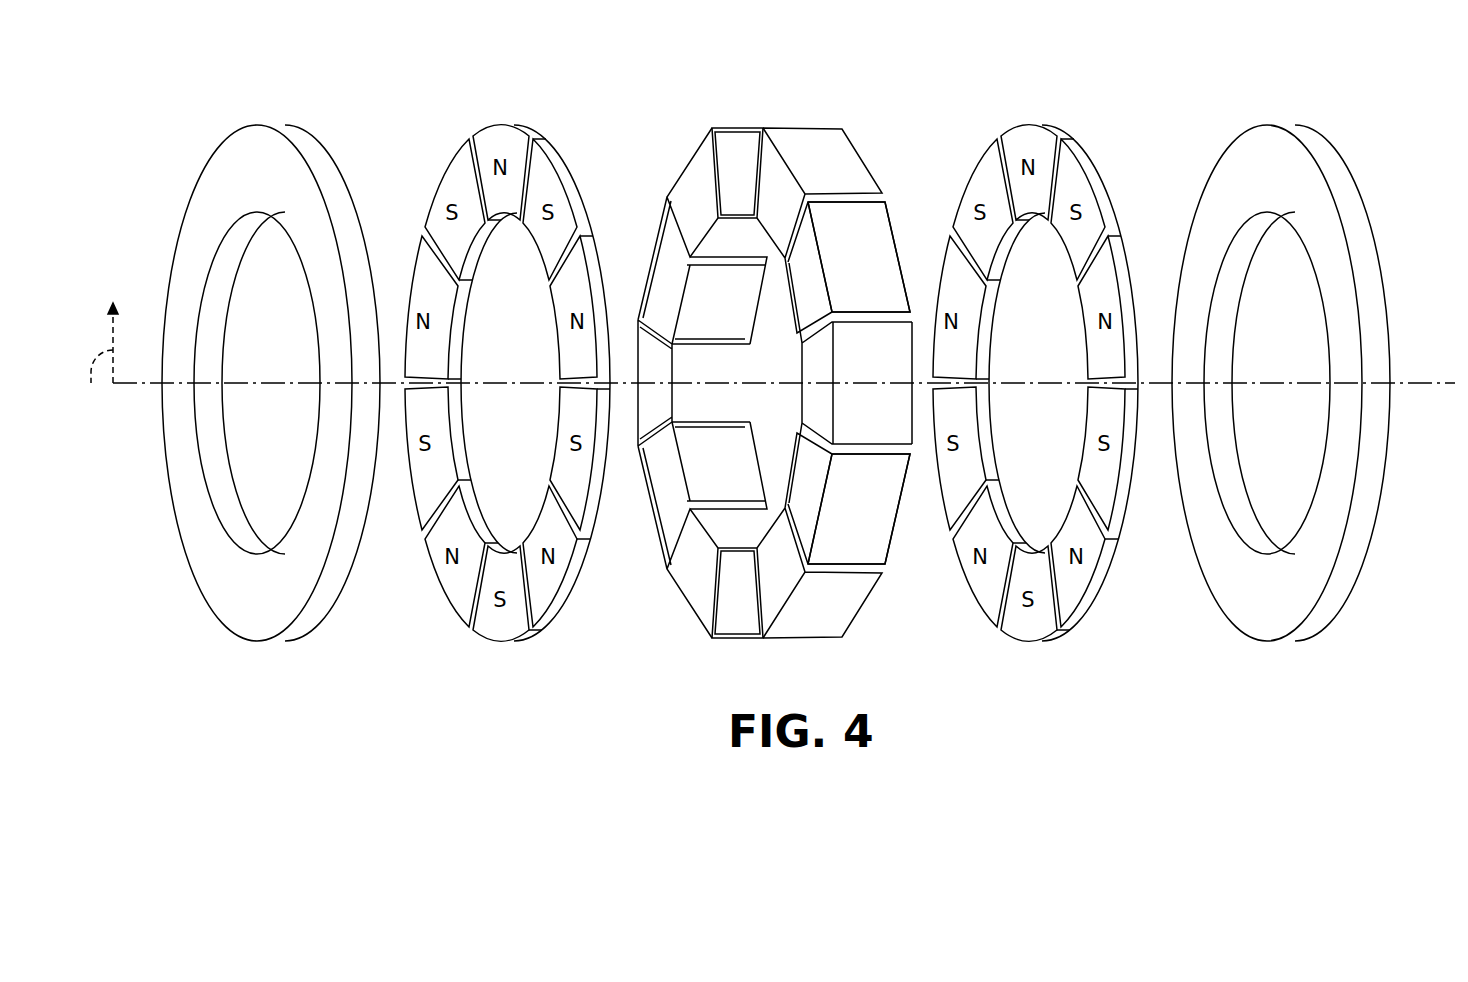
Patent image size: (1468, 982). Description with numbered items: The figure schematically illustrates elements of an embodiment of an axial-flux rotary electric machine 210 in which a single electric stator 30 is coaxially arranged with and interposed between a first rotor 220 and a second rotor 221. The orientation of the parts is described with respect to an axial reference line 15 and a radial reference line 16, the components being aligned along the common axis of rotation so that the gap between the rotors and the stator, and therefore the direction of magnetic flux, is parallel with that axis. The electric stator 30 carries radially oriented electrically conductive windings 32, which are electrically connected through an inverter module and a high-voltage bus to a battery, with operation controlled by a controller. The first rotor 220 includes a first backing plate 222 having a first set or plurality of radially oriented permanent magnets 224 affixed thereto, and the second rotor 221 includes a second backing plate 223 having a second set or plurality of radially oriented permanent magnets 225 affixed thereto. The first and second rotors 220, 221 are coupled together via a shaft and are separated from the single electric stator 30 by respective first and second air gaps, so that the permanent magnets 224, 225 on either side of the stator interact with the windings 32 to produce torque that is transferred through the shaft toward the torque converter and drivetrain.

The axial-flux rotary electric machine 210 is at (156, 109).
The first rotor 220 is at (193, 109).
The second rotor 221 is at (1335, 109).
The first backing plate 222 is at (202, 272).
The second backing plate 223 is at (1230, 188).
The radially oriented permanent magnets 224 is at (582, 277).
The radially oriented permanent magnets 225 is at (953, 287).
The electric stator 30 is at (700, 193).
The radially oriented electrically conductive windings 32 is at (855, 227).
The axial reference line 15 is at (130, 379).
The radial reference line 16 is at (96, 377).